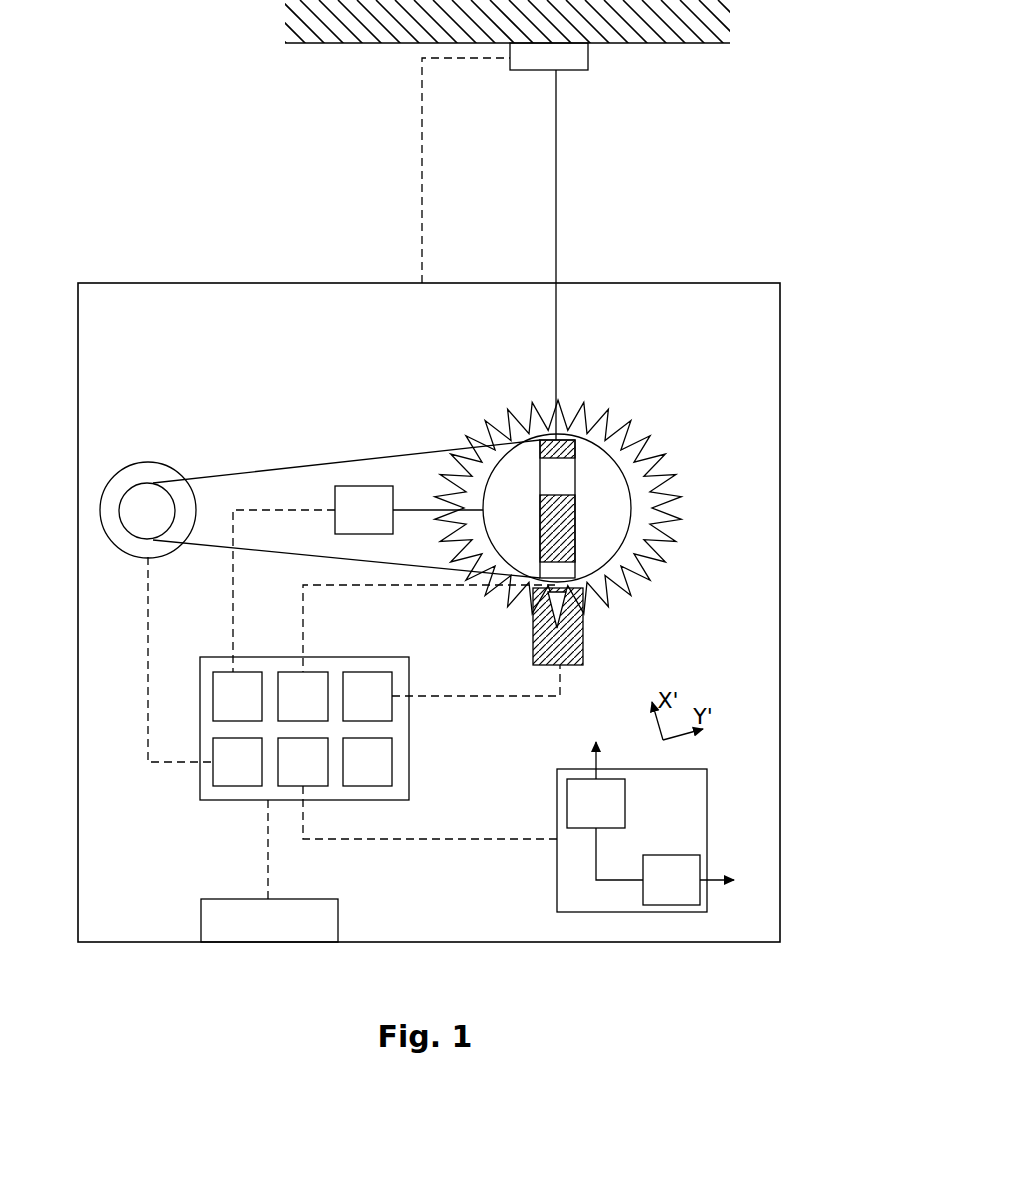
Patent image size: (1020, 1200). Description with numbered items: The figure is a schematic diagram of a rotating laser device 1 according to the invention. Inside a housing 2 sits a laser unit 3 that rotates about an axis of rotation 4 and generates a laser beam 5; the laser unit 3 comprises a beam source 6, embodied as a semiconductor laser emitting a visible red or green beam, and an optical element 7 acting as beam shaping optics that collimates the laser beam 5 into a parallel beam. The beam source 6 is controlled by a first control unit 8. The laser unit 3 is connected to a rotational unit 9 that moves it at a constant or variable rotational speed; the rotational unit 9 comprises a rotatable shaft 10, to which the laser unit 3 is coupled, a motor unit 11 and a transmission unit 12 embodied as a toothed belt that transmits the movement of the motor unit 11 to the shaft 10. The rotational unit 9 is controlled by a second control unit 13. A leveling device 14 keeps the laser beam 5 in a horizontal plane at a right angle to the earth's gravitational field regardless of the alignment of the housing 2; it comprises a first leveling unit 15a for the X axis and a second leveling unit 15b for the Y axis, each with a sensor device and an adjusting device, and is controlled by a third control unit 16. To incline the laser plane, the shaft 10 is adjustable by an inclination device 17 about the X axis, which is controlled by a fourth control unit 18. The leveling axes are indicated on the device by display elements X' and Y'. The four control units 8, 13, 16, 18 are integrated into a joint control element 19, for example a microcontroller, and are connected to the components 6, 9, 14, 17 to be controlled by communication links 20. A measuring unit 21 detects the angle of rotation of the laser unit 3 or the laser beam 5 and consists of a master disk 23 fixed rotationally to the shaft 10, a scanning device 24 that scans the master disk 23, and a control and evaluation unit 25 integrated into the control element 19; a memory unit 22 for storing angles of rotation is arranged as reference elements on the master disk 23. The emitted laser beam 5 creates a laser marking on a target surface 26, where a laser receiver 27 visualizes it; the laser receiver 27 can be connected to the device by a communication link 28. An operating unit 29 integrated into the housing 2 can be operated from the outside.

The rotating laser device 1 is at (192, 228).
The housing 2 is at (318, 283).
The laser unit 3 is at (525, 461).
The axis of rotation 4 is at (558, 519).
The laser beam 5 is at (556, 323).
The beam source 6 is at (575, 540).
The optical element 7 is at (583, 440).
The first control unit 8 is at (296, 708).
The rotational unit 9 is at (320, 448).
The rotatable shaft 10 is at (590, 488).
The motor unit 11 is at (148, 462).
The transmission unit 12 is at (340, 462).
The second control unit 13 is at (224, 774).
The leveling device 14 is at (608, 827).
The first leveling unit 15a is at (578, 815).
The second leveling unit 15b is at (653, 892).
The third control unit 16 is at (290, 774).
The inclination device 17 is at (351, 522).
The fourth control unit 18 is at (224, 708).
The control element 19 is at (304, 762).
The communication links 20 is at (233, 573).
The measuring unit 21 is at (664, 596).
The memory unit 22 is at (354, 774).
The master disk 23 is at (640, 522).
The scanning device 24 is at (585, 650).
The control and evaluation unit 25 is at (354, 708).
The target surface 26 is at (340, 43).
The laser receiver 27 is at (572, 70).
The communication link 28 is at (422, 180).
The operating unit 29 is at (255, 932).